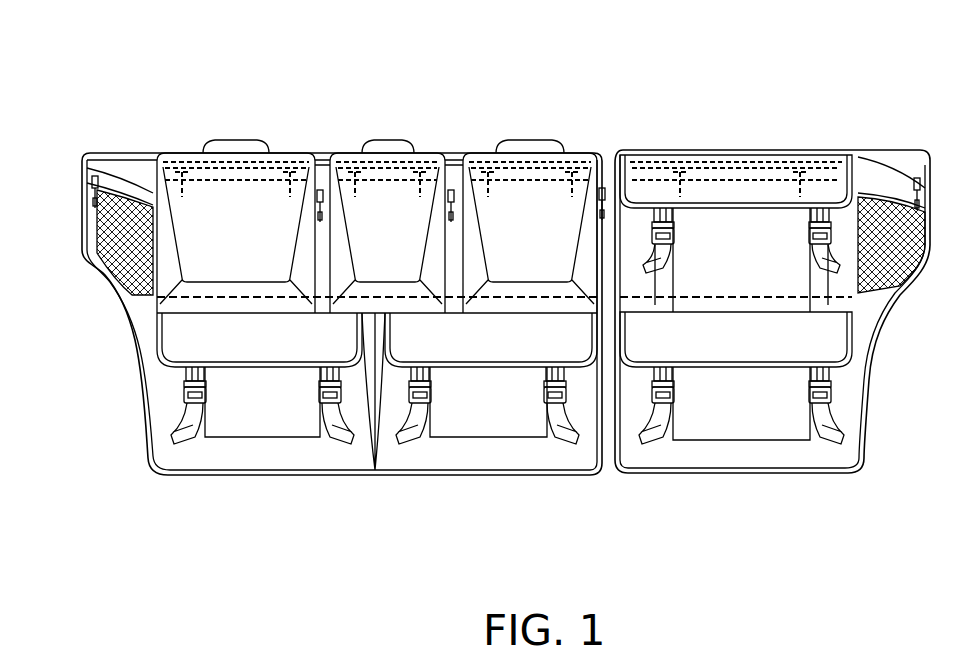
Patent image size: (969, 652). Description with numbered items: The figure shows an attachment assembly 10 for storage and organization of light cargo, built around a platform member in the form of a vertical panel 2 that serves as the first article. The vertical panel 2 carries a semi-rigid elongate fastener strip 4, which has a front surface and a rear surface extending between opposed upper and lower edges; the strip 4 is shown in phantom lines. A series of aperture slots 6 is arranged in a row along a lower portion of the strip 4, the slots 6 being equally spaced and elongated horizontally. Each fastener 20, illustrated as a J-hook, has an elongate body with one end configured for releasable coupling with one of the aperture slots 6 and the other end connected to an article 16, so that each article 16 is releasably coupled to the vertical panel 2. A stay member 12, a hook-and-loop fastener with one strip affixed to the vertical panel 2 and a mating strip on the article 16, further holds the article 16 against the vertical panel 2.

The attachment assembly 10 is at (813, 66).
The vertical panel 2 is at (118, 173).
The elongate fastener strip 4 is at (165, 170).
The aperture slots 6 is at (285, 167).
The fastener 20 is at (417, 170).
The article 16 is at (697, 263).
The stay member 12 is at (857, 312).